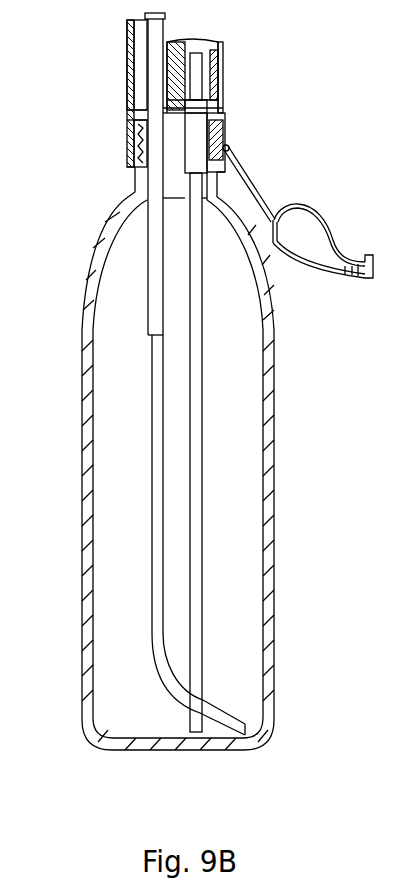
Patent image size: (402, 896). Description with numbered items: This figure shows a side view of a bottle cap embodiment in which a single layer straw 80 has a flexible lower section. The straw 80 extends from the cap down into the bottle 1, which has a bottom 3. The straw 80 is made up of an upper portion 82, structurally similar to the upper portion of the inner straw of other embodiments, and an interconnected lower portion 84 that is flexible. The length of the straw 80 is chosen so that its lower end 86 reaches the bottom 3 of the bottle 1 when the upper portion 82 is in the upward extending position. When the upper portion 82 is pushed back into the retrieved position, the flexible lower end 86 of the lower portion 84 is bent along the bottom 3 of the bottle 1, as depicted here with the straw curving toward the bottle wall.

The bottle 1 is at (282, 467).
The bottom 3 is at (123, 729).
The single layer straw 80 is at (157, 352).
The upper portion 82 is at (153, 247).
The lower portion 84 is at (152, 633).
The lower end 86 is at (266, 708).